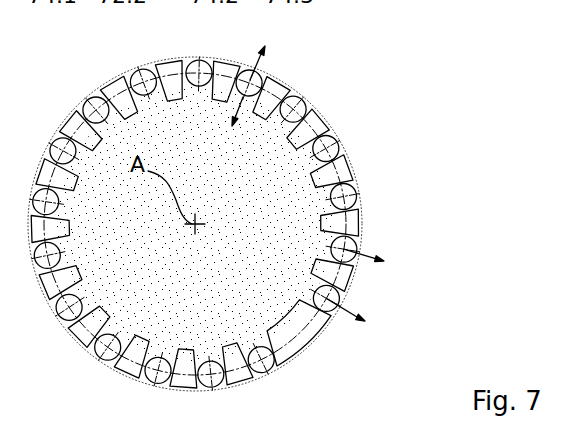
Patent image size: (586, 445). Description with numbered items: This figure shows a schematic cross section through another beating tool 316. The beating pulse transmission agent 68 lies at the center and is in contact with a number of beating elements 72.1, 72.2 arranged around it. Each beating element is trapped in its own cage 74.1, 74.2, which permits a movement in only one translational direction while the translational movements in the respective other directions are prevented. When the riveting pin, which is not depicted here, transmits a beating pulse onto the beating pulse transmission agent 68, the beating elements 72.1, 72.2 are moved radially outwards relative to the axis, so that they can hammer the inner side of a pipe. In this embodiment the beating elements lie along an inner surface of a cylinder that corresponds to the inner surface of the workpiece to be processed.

The beating pulse transmission agent 68 is at (273, 155).
The beating tool 316 is at (391, 151).
The beating element 72.1 is at (356, 245).
The beating element 72.2 is at (339, 292).
The cage 74.1 is at (354, 277).
The cage 74.2 is at (332, 314).